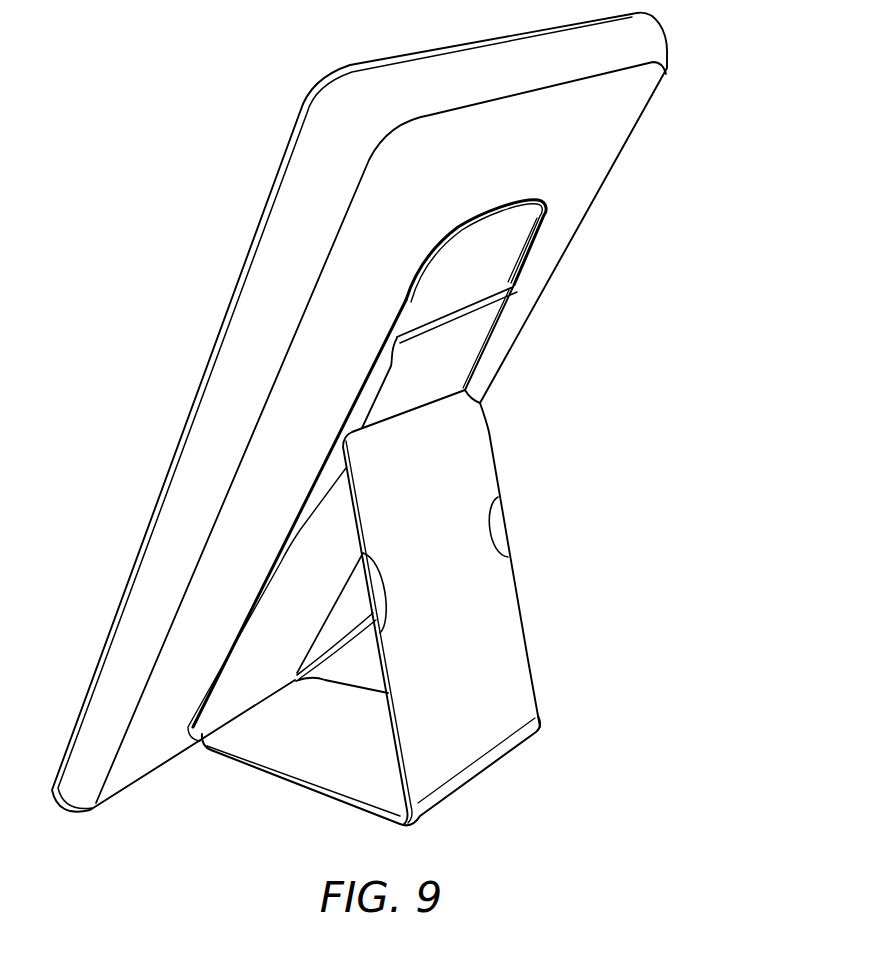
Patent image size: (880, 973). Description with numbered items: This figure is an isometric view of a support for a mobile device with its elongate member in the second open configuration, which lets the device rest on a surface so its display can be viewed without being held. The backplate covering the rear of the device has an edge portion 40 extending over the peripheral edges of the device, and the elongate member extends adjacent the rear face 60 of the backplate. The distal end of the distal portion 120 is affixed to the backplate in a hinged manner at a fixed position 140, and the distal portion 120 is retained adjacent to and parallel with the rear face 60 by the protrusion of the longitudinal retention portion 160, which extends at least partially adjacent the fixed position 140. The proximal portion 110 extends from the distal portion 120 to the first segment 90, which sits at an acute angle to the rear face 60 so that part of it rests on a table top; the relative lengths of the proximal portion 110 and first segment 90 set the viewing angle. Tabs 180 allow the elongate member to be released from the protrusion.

The edge portion 40 is at (353, 107).
The rear face 60 is at (615, 110).
The first segment 90 is at (315, 767).
The proximal portion 110 is at (507, 625).
The distal portion 120 is at (468, 347).
The fixed position 140 is at (477, 296).
The longitudinal retention portion 160 is at (363, 403).
The tabs 180 is at (500, 527).